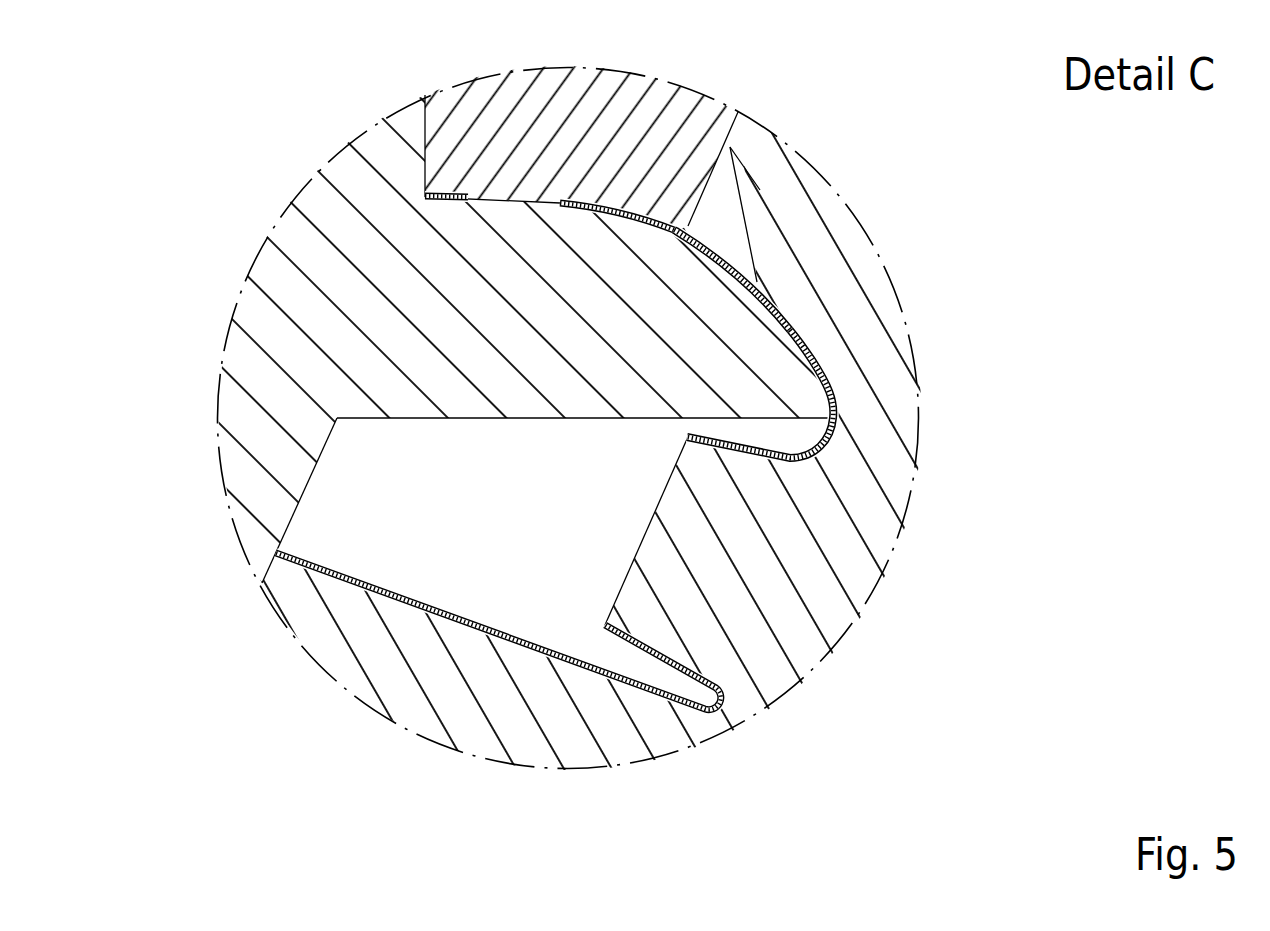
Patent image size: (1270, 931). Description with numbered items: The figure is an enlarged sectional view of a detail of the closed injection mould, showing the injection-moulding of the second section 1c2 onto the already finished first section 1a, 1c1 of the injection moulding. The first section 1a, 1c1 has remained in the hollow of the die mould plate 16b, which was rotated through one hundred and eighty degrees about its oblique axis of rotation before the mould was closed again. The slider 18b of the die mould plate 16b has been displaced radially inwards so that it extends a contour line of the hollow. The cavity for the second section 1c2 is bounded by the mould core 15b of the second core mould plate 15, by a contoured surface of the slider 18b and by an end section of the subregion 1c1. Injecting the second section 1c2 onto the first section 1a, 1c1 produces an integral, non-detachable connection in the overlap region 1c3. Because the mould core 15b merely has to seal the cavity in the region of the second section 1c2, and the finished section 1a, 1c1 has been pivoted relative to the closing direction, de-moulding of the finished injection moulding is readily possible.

The second core mould plate 15 is at (258, 262).
The mould core 15b is at (539, 415).
The die mould plate 16b is at (879, 268).
The slider 18b is at (570, 63).
The first section of the injection moulding 1a is at (537, 646).
The subregion of the first section of the injection moulding 1c1 is at (813, 342).
The second section of the injection moulding 1c2 is at (586, 204).
The overlap region 1c3 is at (714, 240).